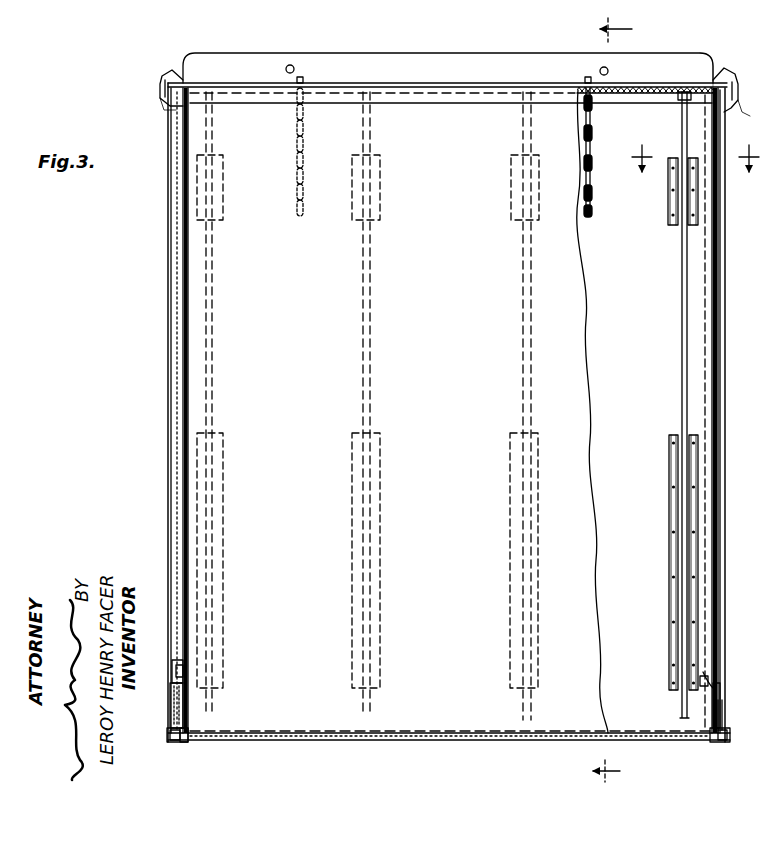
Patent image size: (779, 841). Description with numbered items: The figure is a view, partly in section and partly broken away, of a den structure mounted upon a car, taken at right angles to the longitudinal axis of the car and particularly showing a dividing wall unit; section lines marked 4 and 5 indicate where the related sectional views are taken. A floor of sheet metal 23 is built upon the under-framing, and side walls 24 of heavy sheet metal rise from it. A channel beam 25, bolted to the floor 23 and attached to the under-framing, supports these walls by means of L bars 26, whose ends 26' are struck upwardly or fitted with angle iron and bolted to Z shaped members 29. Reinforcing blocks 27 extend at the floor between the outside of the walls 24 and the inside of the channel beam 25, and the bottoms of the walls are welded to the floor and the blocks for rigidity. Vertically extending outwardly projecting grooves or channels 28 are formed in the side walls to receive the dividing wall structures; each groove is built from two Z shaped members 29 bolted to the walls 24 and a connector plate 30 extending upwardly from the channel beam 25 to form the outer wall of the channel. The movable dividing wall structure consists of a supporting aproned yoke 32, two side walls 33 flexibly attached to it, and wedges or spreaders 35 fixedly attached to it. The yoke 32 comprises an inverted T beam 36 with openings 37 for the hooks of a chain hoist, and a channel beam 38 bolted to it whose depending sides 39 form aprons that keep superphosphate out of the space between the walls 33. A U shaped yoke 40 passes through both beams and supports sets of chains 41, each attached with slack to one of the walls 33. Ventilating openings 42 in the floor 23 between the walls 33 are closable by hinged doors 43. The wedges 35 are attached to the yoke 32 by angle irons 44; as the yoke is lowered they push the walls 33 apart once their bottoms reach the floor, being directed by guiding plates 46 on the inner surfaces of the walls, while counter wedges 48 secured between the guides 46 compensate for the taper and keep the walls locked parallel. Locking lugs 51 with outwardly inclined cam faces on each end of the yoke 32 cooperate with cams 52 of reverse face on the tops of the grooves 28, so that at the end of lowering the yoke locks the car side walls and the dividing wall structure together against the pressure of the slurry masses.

The floor 23 is at (300, 742).
The side walls 24 is at (190, 362).
The channel beam 25 is at (172, 707).
The L bars 26 is at (451, 655).
The ends of L beams 26' is at (165, 657).
The reinforcing blocks 27 is at (184, 743).
The grooves or channels 28 is at (180, 70).
The Z shaped members 29 is at (170, 547).
The connector plate 30 is at (726, 372).
The supporting aproned yoke 32 is at (722, 62).
The side walls of dividing structure 33 is at (451, 411).
The wedges or spreaders 35 is at (372, 255).
The inverted T beam 36 is at (681, 60).
The openings 37 is at (606, 66).
The channel beam of yoke 38 is at (710, 90).
The depending sides 39 is at (425, 104).
The U shaped yoke 40 is at (306, 79).
The chains 41 is at (300, 216).
The ventilating openings 42 is at (725, 726).
The hinged doors 43 is at (172, 743).
The angle irons 44 is at (540, 92).
The guiding plates 46 is at (223, 183).
The counter wedges 48 is at (512, 191).
The locking lugs 51 is at (171, 81).
The cams 52 is at (168, 108).
The section line 4- 4 is at (600, 402).
The section line 5- 5 is at (695, 174).